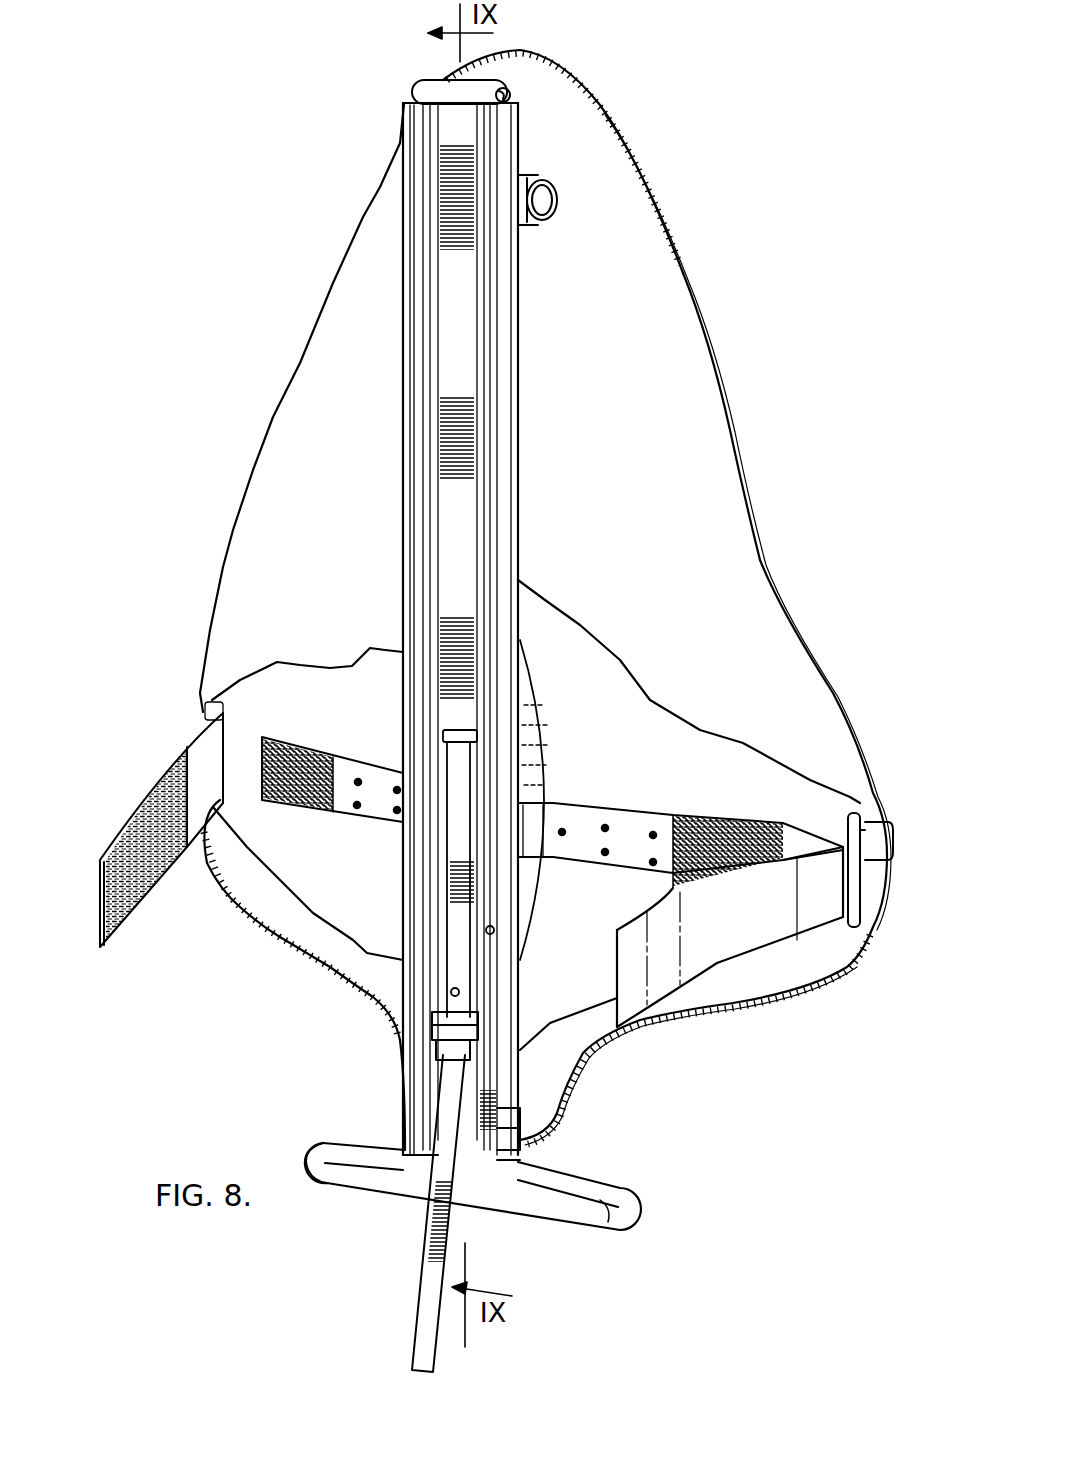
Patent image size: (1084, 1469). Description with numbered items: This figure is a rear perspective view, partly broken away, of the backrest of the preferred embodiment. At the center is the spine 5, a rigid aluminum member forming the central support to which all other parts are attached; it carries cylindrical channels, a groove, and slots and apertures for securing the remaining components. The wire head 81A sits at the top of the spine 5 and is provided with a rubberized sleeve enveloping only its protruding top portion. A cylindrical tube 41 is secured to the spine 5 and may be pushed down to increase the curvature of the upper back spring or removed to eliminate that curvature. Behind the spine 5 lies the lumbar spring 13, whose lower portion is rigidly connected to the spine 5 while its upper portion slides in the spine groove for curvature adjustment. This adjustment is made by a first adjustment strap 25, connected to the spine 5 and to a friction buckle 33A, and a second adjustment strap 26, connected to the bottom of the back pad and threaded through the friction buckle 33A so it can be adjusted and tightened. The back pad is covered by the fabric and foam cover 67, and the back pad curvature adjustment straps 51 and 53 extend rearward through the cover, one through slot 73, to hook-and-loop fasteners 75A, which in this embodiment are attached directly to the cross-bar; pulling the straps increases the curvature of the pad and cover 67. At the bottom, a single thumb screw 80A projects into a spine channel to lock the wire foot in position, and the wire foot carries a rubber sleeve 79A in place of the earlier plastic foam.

The spine 5 is at (410, 301).
The lumbar spring 13 is at (548, 762).
The first adjustment strap 25 is at (455, 820).
The second adjustment strap 26 is at (428, 1312).
The friction buckle 33A is at (433, 1033).
The cylindrical tube 41 is at (543, 197).
The back pad curvature adjustment strap 51 is at (733, 937).
The back pad curvature adjustment strap 53 is at (157, 793).
The fabric and foam cover 67 is at (740, 540).
The slot 73 is at (870, 800).
The hook-and-loop fasteners 75A is at (313, 752).
The rubber sleeve 79A is at (580, 1233).
The thumb screw 80A is at (521, 1120).
The wire head 81A is at (430, 88).